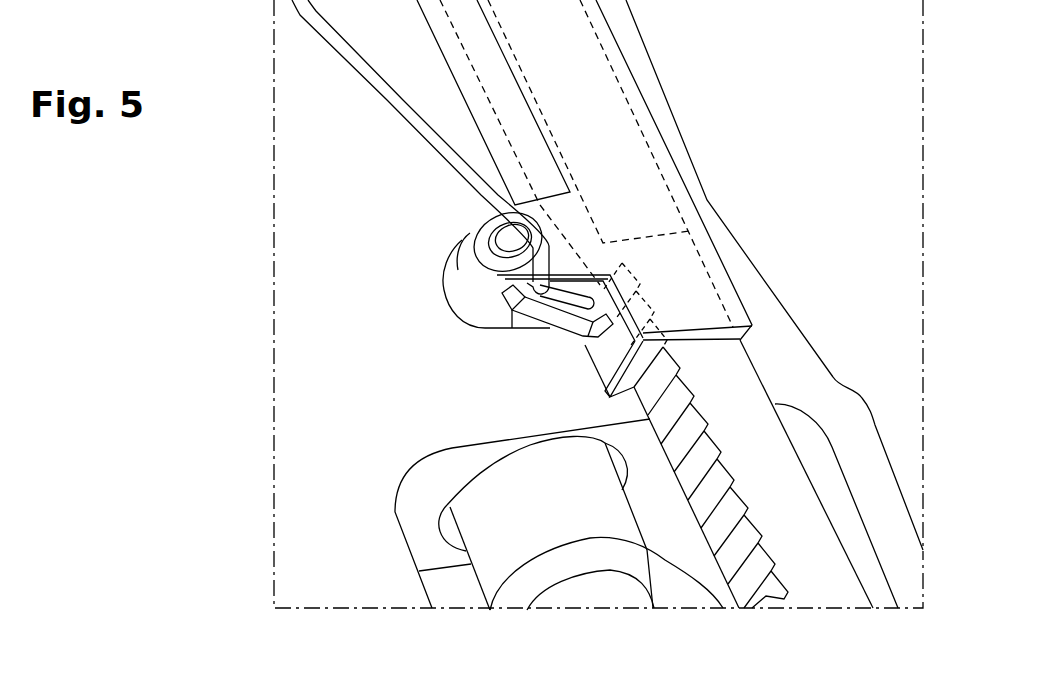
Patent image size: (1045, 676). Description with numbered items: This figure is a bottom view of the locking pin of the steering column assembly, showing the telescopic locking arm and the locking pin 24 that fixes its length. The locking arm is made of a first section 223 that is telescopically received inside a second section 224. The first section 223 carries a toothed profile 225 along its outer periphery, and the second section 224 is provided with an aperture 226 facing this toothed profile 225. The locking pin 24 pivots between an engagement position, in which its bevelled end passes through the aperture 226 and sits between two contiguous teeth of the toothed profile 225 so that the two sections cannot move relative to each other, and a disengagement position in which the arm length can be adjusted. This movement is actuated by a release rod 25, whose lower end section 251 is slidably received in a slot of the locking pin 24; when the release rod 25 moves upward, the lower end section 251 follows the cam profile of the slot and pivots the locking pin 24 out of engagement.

The release rod 25 is at (390, 106).
The second section 224 is at (690, 212).
The lower end section 251 is at (497, 282).
The locking pin 24 is at (553, 333).
The aperture 226 is at (605, 345).
The toothed profile 225 is at (745, 577).
The first section 223 is at (835, 603).